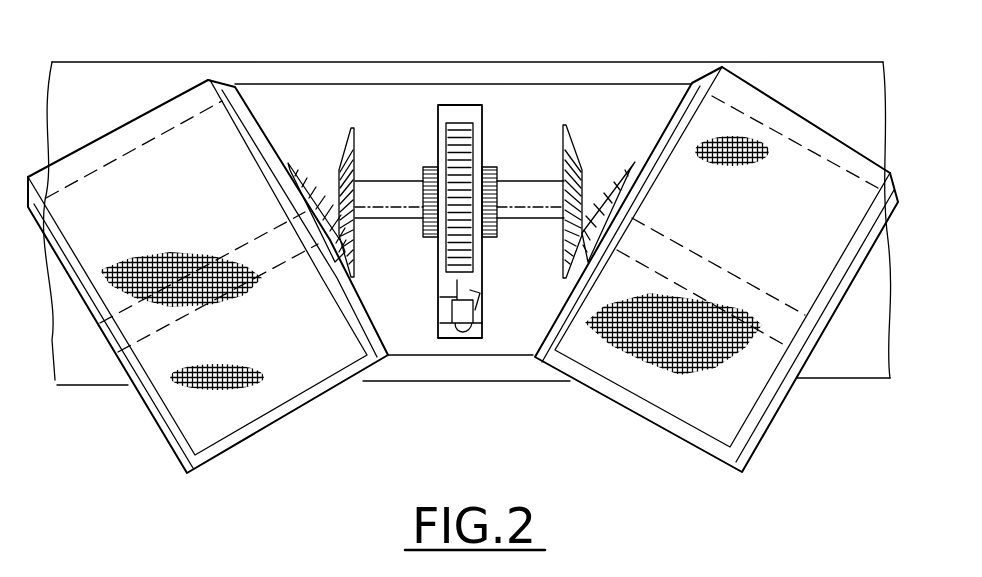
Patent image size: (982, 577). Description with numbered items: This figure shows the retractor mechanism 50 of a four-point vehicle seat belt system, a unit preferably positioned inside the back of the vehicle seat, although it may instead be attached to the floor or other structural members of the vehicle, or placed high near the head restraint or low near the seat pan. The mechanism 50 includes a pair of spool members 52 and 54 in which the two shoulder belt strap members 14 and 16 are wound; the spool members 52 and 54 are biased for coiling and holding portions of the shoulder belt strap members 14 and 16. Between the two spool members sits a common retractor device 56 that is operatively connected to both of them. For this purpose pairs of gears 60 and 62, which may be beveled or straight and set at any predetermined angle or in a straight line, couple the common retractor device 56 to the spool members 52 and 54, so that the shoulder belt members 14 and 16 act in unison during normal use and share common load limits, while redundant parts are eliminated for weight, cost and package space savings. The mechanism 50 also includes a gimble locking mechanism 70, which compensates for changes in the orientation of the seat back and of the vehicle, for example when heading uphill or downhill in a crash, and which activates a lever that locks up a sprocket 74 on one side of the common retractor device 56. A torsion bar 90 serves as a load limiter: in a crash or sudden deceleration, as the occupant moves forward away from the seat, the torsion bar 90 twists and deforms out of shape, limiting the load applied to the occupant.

The shoulder belt strap member 14 is at (288, 375).
The shoulder belt strap member 16 is at (667, 402).
The retractor mechanism 50 is at (462, 397).
The spool member 52 is at (166, 438).
The spool member 54 is at (765, 433).
The common retractor device 56 is at (470, 103).
The gear 60 is at (312, 158).
The gear 62 is at (610, 156).
The gimble locking mechanism 70 is at (465, 330).
The sprocket 74 is at (473, 127).
The torsion bar 90 is at (378, 190).